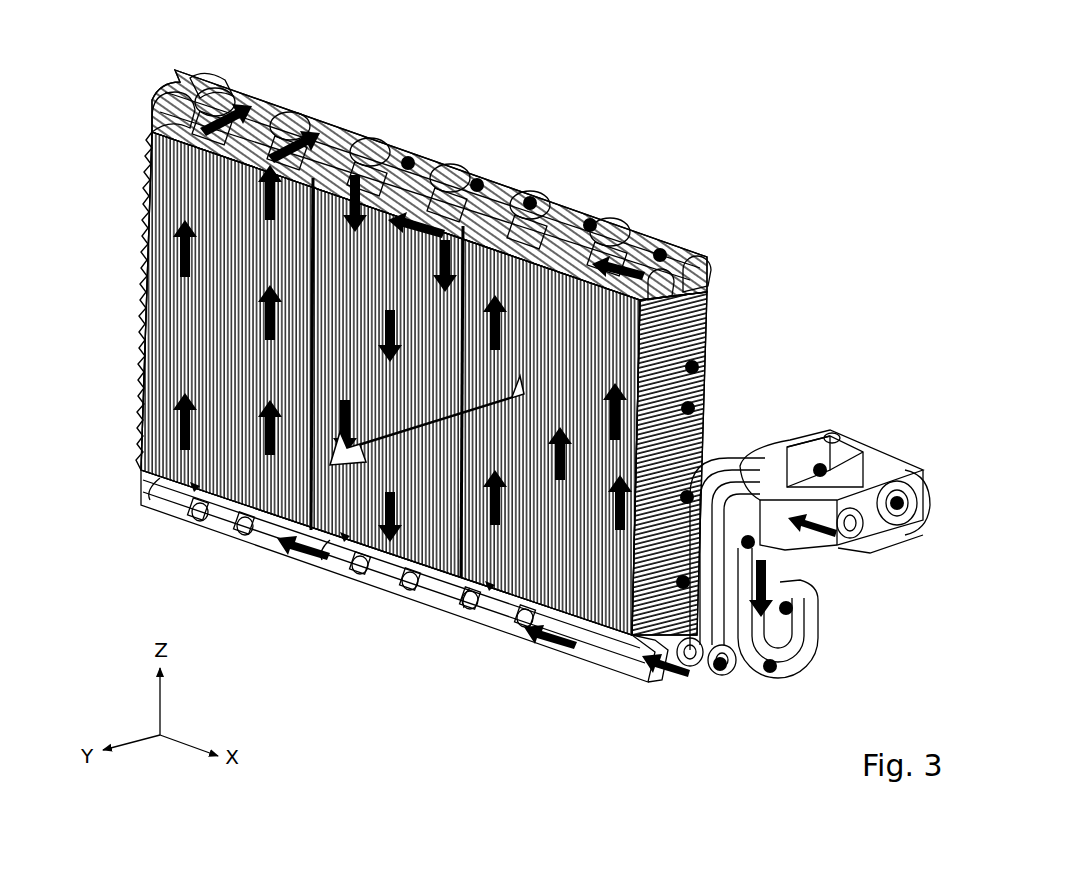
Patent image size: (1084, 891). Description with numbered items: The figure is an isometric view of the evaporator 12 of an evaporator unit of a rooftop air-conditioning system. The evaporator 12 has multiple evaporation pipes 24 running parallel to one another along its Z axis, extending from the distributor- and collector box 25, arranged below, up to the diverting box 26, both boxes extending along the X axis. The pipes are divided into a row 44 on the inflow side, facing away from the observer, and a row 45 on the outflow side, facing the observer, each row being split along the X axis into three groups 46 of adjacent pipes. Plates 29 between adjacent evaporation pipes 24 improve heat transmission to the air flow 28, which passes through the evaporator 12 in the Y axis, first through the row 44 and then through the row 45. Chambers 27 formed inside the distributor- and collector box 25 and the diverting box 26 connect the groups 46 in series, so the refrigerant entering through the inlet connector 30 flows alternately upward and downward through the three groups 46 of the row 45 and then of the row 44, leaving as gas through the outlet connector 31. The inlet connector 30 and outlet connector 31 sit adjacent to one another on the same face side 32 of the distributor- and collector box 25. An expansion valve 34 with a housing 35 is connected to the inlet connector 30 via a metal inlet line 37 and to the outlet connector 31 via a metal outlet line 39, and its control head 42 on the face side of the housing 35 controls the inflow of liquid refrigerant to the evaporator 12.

The evaporator 12 is at (498, 374).
The evaporation pipes 24 is at (268, 545).
The distributor- and collector box 25 is at (430, 617).
The diverting box 26 is at (616, 210).
The chambers 27 is at (275, 105).
The air flow 28 is at (404, 437).
The plates 29 is at (150, 240).
The inlet connector 30 is at (668, 684).
The outlet connector 31 is at (728, 678).
The face side 32 is at (690, 678).
The expansion valve 34 is at (881, 442).
The housing 35 is at (866, 538).
The inlet line 37 is at (716, 490).
The outlet line 39 is at (810, 642).
The control head 42 is at (920, 460).
The row on the inflow side 44 is at (185, 71).
The row on the outflow side 45 is at (146, 94).
The groups 46 is at (190, 500).